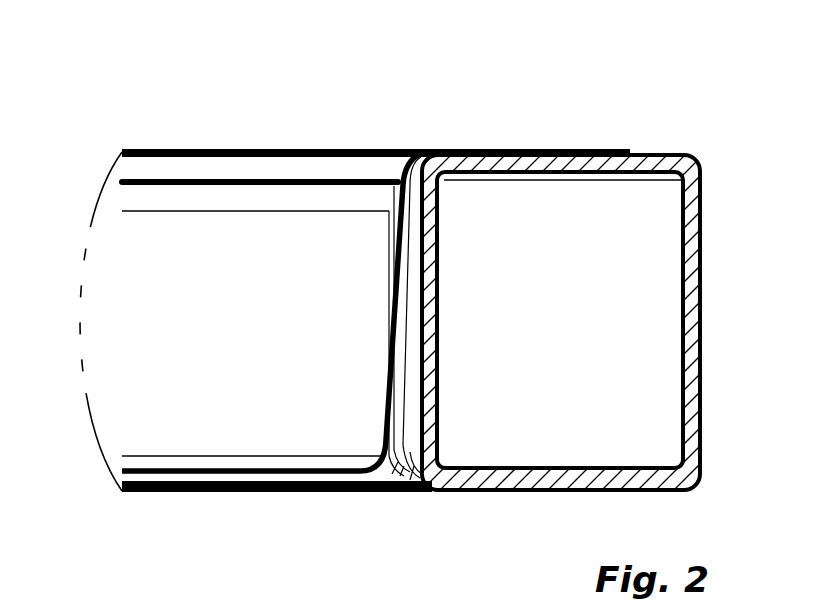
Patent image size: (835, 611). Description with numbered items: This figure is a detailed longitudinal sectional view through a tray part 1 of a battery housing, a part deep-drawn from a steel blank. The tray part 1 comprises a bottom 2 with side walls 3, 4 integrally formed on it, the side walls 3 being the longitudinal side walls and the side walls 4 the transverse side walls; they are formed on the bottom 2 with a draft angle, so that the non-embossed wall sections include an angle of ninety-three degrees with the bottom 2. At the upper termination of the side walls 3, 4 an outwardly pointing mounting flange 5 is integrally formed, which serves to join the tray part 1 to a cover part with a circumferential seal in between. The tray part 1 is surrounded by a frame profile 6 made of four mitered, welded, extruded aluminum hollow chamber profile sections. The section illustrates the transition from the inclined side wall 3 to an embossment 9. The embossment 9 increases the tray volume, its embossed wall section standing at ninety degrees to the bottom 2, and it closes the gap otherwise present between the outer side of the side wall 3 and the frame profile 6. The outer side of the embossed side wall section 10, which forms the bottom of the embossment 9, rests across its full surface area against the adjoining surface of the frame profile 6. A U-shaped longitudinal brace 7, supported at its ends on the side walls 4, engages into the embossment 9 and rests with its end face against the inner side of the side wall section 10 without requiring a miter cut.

The tray part 1 is at (196, 132).
The bottom 2 is at (237, 480).
The longitudinal side wall 3 is at (316, 158).
The transverse side wall 4 is at (374, 428).
The mounting flange 5 is at (507, 148).
The frame profile 6 is at (706, 258).
The longitudinal brace 7 is at (152, 334).
The embossment 9 is at (402, 468).
The side wall section 10 is at (413, 480).